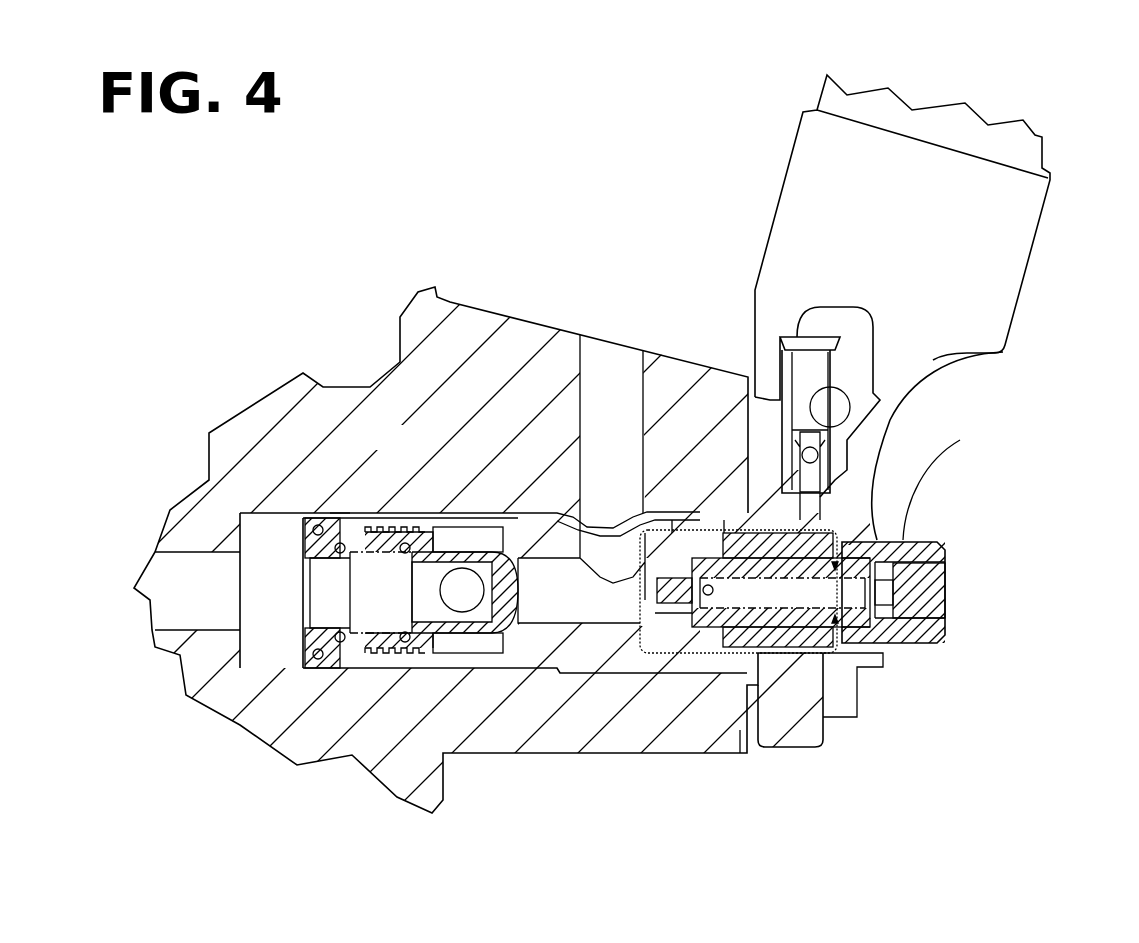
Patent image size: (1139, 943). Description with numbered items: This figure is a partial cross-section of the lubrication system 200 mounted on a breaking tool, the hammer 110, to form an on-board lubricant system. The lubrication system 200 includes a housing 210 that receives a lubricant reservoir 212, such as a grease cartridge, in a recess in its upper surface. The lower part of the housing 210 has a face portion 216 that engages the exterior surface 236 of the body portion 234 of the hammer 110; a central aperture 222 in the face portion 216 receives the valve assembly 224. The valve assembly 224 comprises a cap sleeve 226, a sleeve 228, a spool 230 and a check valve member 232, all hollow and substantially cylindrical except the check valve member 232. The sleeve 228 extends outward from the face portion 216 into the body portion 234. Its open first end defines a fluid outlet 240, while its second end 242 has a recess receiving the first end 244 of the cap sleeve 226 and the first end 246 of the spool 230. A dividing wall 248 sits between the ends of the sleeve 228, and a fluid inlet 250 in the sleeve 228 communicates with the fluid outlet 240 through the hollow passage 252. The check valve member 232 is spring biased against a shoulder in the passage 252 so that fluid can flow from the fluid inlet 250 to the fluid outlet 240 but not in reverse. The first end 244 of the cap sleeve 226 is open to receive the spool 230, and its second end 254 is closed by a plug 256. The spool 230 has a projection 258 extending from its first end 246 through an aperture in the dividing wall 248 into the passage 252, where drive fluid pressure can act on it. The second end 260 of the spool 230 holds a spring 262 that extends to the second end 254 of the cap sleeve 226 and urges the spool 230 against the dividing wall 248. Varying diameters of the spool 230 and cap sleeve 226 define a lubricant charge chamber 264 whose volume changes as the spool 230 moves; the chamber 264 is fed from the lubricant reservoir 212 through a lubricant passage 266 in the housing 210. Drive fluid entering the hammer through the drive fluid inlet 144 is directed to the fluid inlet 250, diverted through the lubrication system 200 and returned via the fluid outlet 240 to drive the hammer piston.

The lubrication system 200 is at (612, 194).
The hammer 110 is at (558, 284).
The lubricant reservoir 212 is at (1020, 207).
The drive fluid inlet 144 is at (606, 362).
The fluid inlet 250 is at (597, 500).
The dividing wall 248 is at (672, 520).
The first end of the cap sleeve 244 is at (724, 520).
The sleeve 228 is at (343, 520).
The body portion 234 is at (398, 448).
The fluid outlet 240 is at (295, 570).
The check valve member 232 is at (418, 655).
The hollow passage 252 is at (567, 602).
The projection 258 is at (655, 590).
The spring 262 is at (700, 600).
The second end of the sleeve 242 is at (723, 690).
The first end of the spool 246 is at (667, 613).
The face portion 216 is at (738, 735).
The housing 210 is at (783, 737).
The exterior surface 236 is at (760, 710).
The central aperture 222 is at (877, 633).
The valve assembly 224 is at (960, 652).
The cap sleeve 226 is at (947, 547).
The second end of the cap sleeve 254 is at (945, 565).
The plug 256 is at (945, 600).
The spool 230 is at (847, 540).
The second end of the spool 260 is at (907, 533).
The lubricant charge chamber 264 is at (840, 500).
The lubricant passage 266 is at (850, 467).